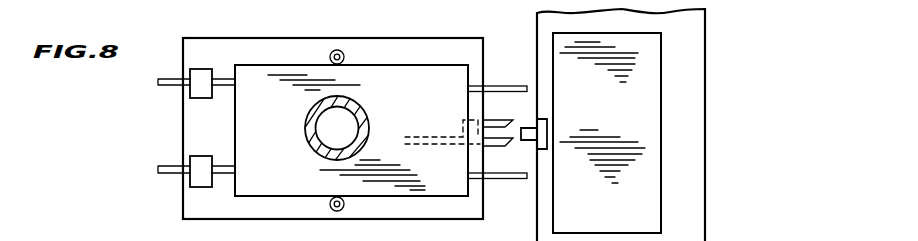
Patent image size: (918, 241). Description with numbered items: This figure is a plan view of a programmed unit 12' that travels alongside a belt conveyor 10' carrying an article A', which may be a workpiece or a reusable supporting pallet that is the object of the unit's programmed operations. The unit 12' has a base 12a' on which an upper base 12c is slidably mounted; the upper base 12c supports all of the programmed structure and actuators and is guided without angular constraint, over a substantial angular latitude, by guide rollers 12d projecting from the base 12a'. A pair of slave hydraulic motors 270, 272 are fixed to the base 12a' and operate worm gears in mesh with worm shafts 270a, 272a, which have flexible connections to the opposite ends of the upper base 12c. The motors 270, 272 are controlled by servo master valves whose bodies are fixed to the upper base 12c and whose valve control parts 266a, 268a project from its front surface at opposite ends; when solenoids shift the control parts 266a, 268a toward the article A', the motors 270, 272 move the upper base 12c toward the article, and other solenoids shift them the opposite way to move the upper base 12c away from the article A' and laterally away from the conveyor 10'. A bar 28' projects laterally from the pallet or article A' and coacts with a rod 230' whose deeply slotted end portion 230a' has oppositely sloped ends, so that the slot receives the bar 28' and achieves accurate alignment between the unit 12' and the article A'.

The conveyor 10' is at (649, 125).
The article A' is at (645, 133).
The base 12a' is at (290, 128).
The upper base 12c is at (263, 68).
The programmed unit 12' is at (329, 131).
The guide rollers 12d is at (336, 50).
The slave hydraulic motor 270 is at (198, 69).
The worm shaft 270a is at (168, 83).
The slave hydraulic motor 272 is at (198, 157).
The worm shaft 272a is at (168, 170).
The valve control part 266a is at (501, 87).
The valve control part 268a is at (507, 179).
The bar 28' is at (522, 122).
The slotted end portion 230a' is at (465, 146).
The rod 230' is at (436, 119).